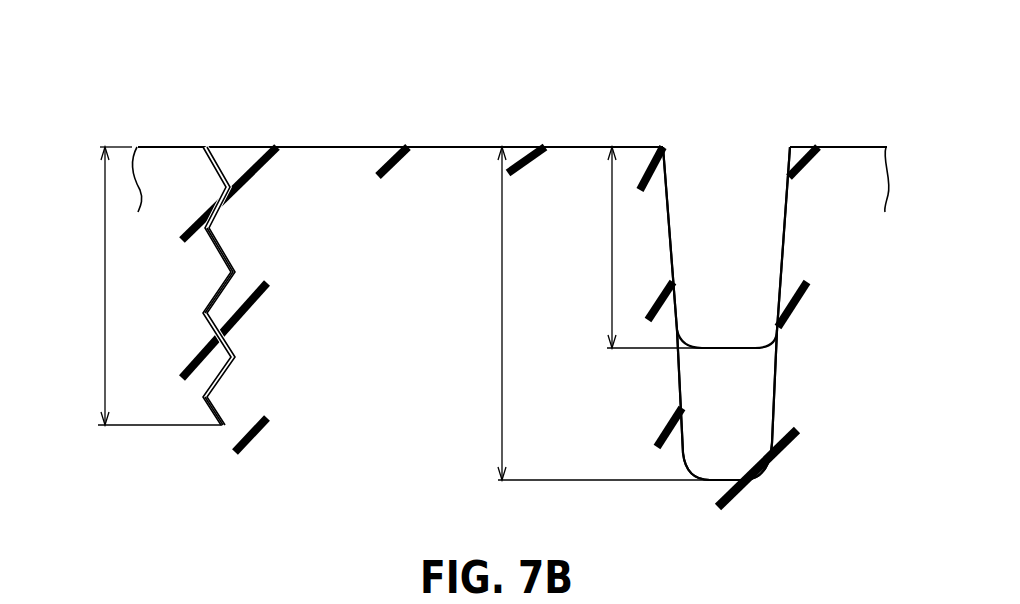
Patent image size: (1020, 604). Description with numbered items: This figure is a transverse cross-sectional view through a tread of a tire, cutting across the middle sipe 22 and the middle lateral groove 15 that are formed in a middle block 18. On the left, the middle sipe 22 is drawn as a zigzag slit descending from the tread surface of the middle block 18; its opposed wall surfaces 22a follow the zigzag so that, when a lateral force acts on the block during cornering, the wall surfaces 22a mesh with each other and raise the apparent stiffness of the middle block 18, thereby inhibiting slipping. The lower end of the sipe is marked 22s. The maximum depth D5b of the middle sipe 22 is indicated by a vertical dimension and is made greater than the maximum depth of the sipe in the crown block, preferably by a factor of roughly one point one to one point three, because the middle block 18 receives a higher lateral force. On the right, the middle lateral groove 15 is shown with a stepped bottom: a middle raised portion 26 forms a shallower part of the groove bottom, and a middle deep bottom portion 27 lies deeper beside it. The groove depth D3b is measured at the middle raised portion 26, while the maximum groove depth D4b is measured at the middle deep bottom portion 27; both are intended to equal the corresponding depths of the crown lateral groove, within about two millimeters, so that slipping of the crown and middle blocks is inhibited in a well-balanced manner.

The middle lateral groove 15 is at (718, 142).
The middle block 18 is at (842, 145).
The middle sipe 22 is at (205, 137).
The wall surfaces of the middle sipe 22a is at (232, 258).
The tip of zigzag structure 22s is at (227, 407).
The middle raised portion 26 is at (787, 262).
The middle deep bottom portion 27 is at (778, 388).
The maximum depth of the middle sipe D5b is at (130, 286).
The maximum groove depth of the middle lateral groove D4b is at (589, 313).
The groove depth at the middle raised portion D3b is at (622, 247).